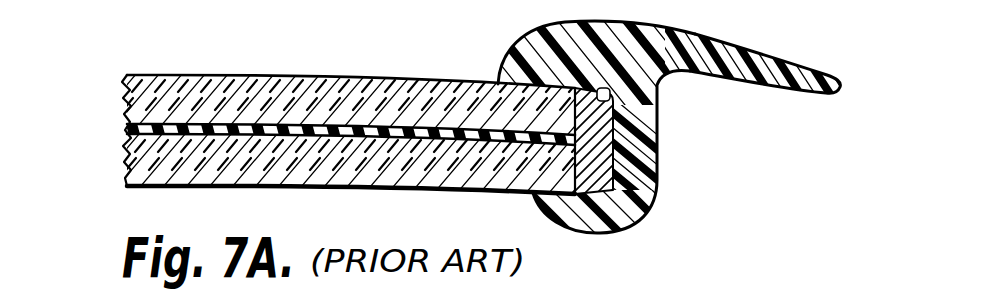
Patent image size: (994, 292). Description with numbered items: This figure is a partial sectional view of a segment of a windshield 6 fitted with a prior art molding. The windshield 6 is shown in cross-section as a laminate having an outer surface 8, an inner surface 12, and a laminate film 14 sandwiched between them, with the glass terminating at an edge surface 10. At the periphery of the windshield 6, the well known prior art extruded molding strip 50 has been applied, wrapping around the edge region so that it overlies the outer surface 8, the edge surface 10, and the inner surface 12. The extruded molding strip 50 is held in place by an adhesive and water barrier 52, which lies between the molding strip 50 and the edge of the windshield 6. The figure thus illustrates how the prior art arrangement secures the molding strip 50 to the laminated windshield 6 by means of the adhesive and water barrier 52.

The windshield 6 is at (368, 102).
The outer surface 8 is at (143, 105).
The laminate film 14 is at (125, 132).
The inner surface 12 is at (143, 163).
The edge surface 10 is at (605, 96).
The adhesive and water barrier 52 is at (600, 133).
The extruded molding strip 50 is at (776, 50).